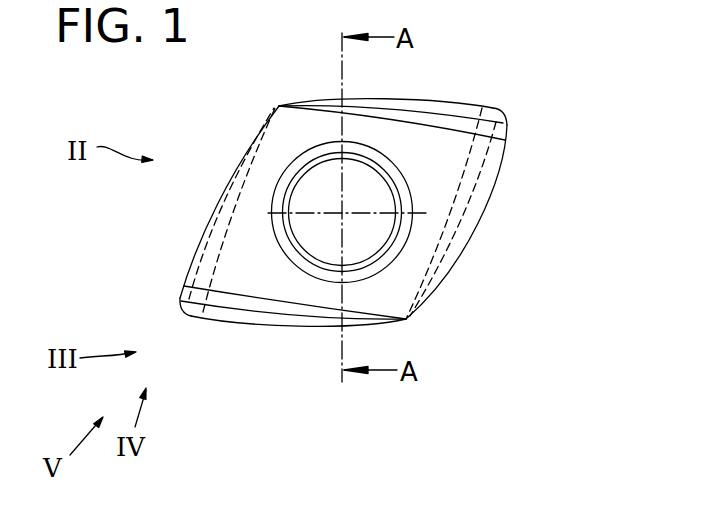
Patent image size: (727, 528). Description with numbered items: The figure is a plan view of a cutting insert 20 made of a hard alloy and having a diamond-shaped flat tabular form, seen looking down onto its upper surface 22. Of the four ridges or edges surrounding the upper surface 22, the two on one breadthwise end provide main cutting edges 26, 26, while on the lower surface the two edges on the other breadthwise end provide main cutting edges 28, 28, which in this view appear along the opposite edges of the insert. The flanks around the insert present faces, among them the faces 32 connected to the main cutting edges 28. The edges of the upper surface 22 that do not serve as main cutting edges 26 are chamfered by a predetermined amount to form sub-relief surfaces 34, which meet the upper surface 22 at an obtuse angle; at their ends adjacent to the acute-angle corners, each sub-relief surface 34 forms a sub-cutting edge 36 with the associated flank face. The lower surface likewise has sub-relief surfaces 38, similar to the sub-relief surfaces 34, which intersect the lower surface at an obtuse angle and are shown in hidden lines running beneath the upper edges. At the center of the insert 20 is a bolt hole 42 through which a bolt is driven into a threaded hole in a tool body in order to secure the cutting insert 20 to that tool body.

The cutting insert 20 is at (514, 106).
The upper surface 22 is at (438, 162).
The main cutting edges 26 is at (470, 236).
The main cutting edges 28 is at (398, 99).
The faces 32 is at (446, 103).
The sub-relief surfaces 34 is at (468, 107).
The sub-cutting edge 36 is at (509, 126).
The sub-relief surfaces 38 is at (460, 198).
The bolt hole 42 is at (342, 212).